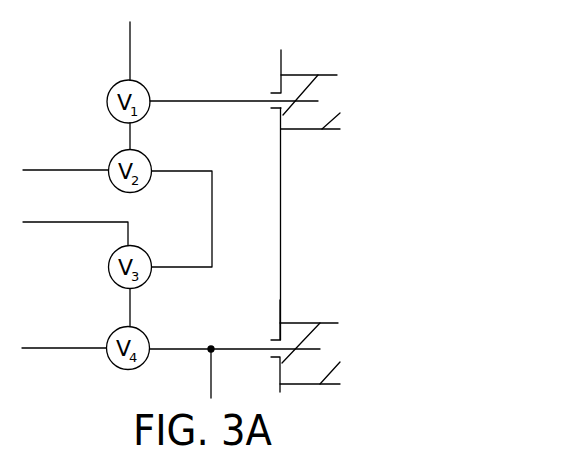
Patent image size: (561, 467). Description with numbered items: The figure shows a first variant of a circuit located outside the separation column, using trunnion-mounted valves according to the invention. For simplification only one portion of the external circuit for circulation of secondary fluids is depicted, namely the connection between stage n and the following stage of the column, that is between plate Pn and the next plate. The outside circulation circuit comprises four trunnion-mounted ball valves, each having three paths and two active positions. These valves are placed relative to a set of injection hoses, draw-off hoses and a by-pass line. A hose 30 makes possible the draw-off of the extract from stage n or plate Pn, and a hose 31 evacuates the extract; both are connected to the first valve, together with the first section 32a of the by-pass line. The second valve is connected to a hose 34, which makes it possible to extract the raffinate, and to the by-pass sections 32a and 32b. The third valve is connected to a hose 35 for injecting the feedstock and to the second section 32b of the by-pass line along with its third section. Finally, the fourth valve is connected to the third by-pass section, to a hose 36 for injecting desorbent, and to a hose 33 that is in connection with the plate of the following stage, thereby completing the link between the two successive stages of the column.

The hose 30 is at (181, 101).
The hose 31 is at (131, 45).
The first section of by-pass line 32a is at (131, 133).
The second section of by-pass line 32b is at (212, 233).
The hose 33 is at (245, 352).
The hose 34 is at (73, 170).
The hose 35 is at (68, 222).
The hose 36 is at (73, 349).
The plate Pn is at (328, 64).